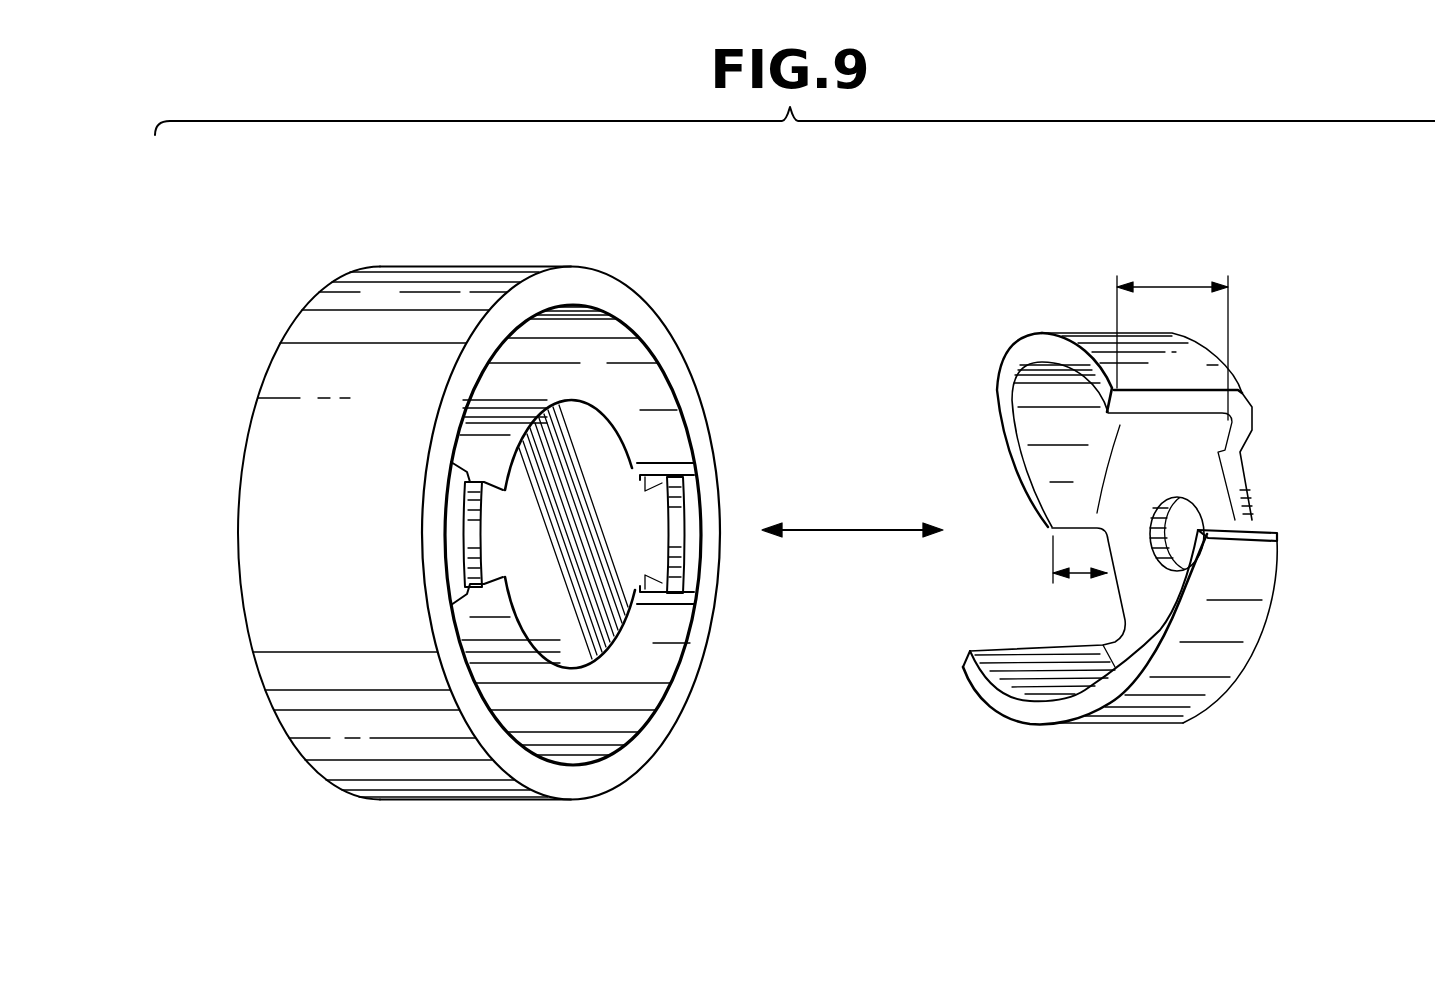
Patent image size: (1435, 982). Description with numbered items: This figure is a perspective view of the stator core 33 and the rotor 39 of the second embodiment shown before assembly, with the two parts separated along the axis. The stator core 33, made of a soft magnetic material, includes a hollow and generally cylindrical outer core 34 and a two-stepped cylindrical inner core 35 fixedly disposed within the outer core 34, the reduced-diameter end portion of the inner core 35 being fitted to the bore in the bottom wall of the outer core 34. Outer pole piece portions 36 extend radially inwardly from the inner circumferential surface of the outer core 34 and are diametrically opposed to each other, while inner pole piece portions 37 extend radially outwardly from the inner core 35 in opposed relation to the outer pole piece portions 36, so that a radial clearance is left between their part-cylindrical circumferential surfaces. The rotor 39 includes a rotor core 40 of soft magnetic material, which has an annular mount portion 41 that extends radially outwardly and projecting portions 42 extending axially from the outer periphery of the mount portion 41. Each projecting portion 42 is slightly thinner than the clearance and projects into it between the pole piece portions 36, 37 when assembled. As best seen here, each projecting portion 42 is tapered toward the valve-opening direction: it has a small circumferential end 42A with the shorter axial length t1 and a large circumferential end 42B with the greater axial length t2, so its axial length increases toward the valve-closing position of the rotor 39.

The stator core 33 is at (303, 290).
The outer core 34 is at (410, 295).
The inner core 35 is at (578, 420).
The outer pole piece portion 36 is at (443, 507).
The inner pole piece portion 37 is at (490, 543).
The rotor 39 is at (970, 426).
The rotor core 40 is at (1258, 658).
The mount portion 41 is at (1212, 480).
The projecting portion 42 is at (1018, 354).
The small circumferential end 42A is at (1258, 551).
The large circumferential end 42B is at (1185, 363).